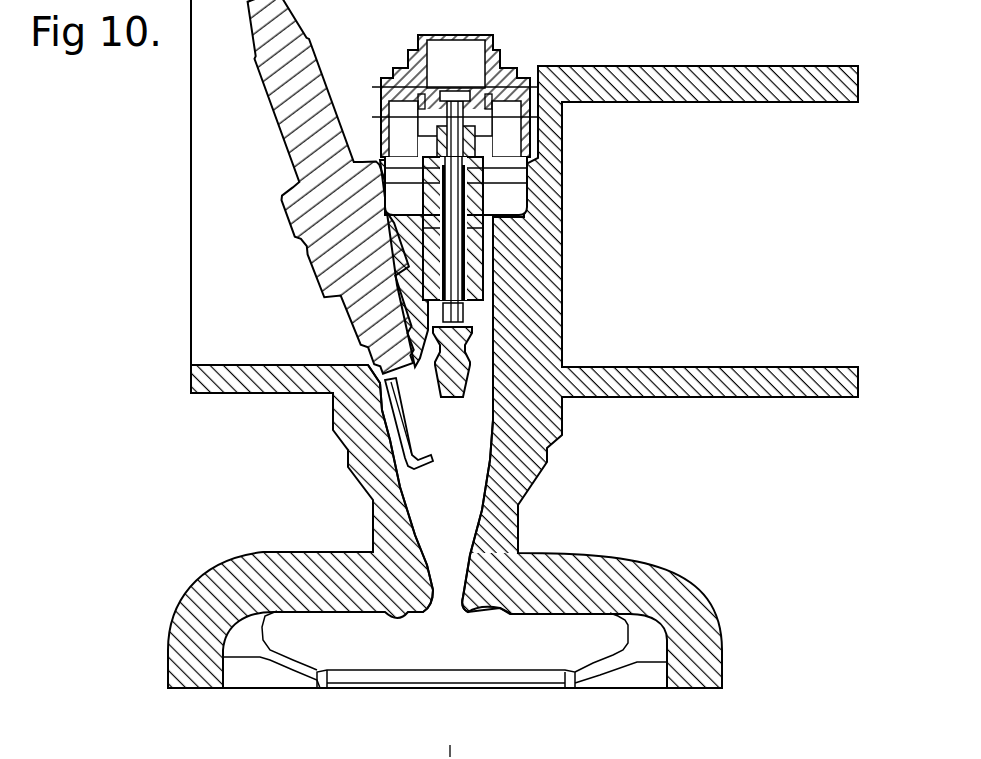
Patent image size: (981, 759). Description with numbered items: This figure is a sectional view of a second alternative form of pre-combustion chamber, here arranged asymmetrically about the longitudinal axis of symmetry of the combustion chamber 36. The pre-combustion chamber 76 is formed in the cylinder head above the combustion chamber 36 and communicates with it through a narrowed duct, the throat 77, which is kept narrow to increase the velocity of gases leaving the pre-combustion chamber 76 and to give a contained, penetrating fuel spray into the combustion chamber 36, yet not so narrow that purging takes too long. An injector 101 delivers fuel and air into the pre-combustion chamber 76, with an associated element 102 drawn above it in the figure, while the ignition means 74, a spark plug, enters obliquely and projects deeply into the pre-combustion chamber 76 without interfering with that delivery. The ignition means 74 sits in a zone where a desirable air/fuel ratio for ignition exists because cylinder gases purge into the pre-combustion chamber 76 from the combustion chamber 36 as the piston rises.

The combustion chamber 36 is at (449, 665).
The ignition means 74 is at (288, 227).
The pre-combustion chamber 76 is at (460, 473).
The throat 77 is at (447, 595).
The injector 101 is at (463, 380).
The sensor body 102 is at (472, 277).